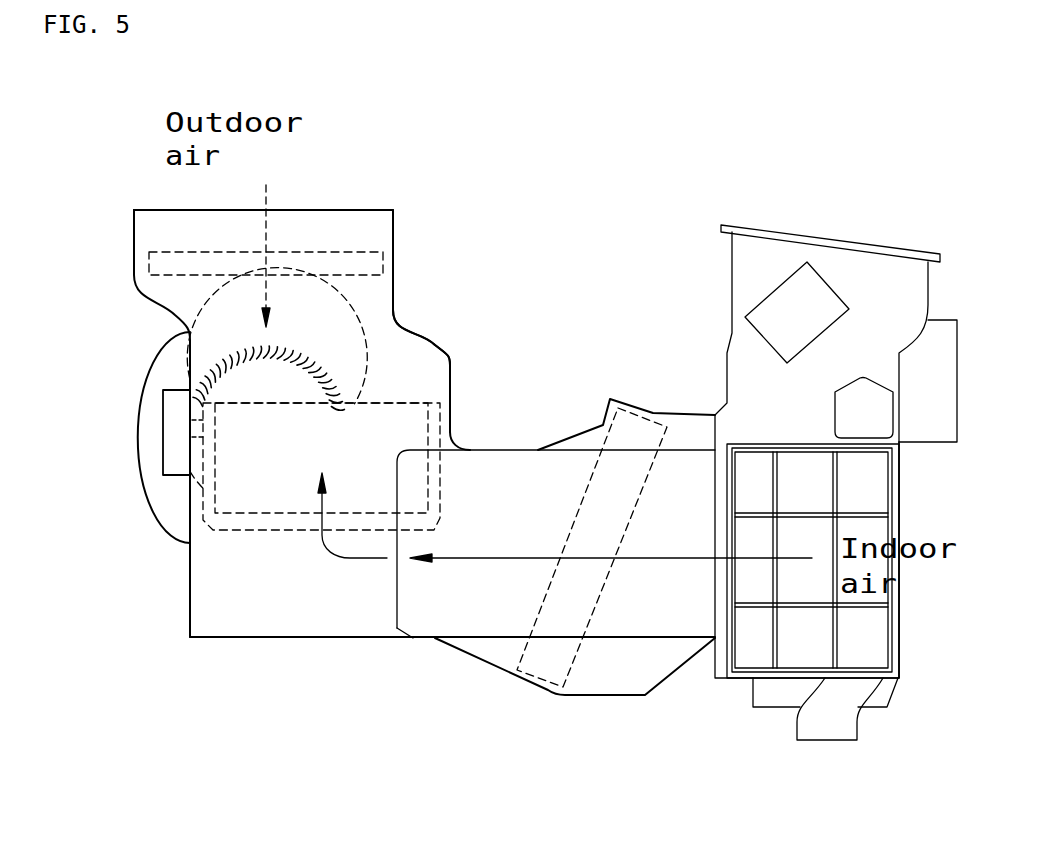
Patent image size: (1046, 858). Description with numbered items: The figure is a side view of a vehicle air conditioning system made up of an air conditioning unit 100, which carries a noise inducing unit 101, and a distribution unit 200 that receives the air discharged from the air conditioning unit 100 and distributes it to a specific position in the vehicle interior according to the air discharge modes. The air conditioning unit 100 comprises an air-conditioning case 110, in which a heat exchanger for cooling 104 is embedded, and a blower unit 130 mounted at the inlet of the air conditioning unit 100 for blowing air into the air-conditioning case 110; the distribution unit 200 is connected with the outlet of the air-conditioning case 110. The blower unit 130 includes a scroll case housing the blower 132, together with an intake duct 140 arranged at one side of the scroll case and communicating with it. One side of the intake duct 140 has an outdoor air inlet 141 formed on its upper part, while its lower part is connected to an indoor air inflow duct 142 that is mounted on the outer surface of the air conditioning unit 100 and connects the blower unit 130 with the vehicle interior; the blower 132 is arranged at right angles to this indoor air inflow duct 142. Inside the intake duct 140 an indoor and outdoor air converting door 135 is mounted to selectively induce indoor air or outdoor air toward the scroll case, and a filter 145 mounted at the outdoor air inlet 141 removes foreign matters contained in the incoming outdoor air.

The air conditioning unit 100 is at (452, 395).
The noise inducing unit 101 is at (172, 627).
The heat exchanger for cooling 104 is at (520, 656).
The air-conditioning case 110 is at (567, 432).
The blower unit 130 is at (153, 536).
The blower 132 is at (211, 375).
The indoor and outdoor air converting door 135 is at (277, 530).
The intake duct 140 is at (410, 367).
The outdoor air inlet 141 is at (338, 208).
The indoor air inflow duct 142 is at (647, 610).
The filter 145 is at (365, 252).
The distribution unit 200 is at (719, 258).